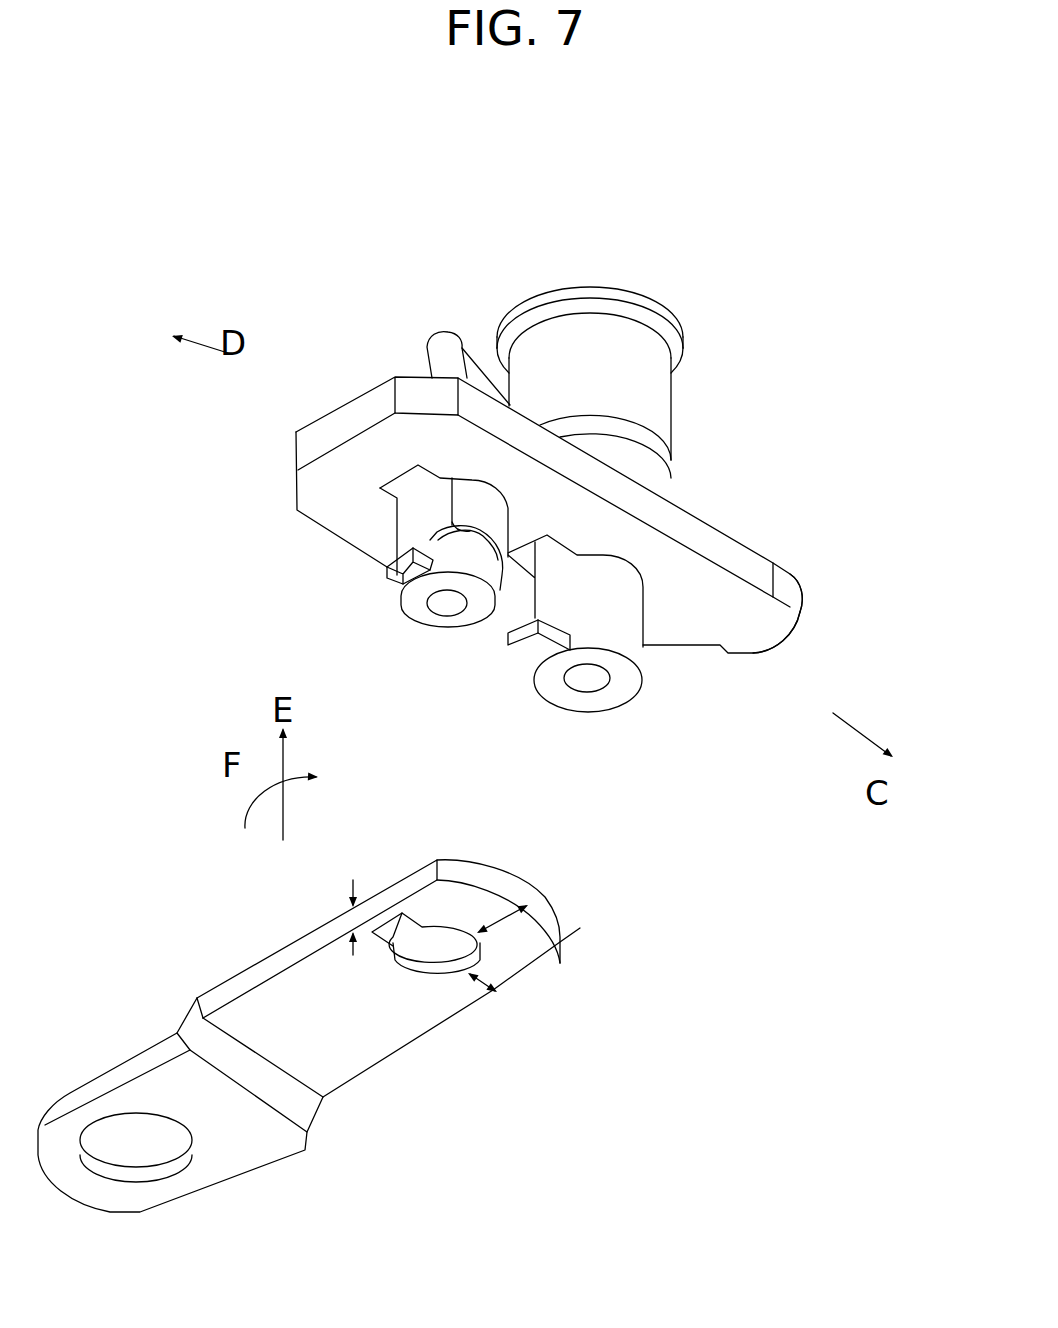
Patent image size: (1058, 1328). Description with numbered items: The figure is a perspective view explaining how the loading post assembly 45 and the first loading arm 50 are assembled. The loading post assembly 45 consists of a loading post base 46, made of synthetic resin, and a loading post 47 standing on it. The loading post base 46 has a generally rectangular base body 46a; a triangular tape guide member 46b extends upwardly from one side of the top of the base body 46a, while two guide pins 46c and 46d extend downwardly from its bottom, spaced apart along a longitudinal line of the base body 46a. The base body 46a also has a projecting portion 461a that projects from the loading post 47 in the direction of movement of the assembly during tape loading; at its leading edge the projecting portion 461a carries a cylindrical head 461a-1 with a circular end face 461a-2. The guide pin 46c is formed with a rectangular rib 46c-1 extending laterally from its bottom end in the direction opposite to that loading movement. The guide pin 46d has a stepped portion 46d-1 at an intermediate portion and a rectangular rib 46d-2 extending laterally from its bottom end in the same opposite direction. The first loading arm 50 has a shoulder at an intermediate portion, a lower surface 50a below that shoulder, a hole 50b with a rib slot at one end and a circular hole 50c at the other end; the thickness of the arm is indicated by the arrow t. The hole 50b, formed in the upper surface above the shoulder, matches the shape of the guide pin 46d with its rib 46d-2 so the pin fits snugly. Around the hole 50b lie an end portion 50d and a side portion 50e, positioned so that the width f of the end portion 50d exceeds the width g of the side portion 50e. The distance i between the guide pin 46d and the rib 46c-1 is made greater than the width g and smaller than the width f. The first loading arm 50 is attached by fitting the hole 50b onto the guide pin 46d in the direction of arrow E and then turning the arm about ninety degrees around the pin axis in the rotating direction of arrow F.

The loading post assembly 45 is at (708, 280).
The loading post base 46 is at (735, 491).
The base body 46a is at (692, 517).
The tape guide member 46b is at (443, 330).
The guide pin 46c is at (633, 647).
The rectangular rib 46c-1 is at (523, 653).
The guide pin 46d is at (423, 627).
The stepped portion 46d-1 is at (455, 511).
The rectangular rib 46d-2 is at (397, 586).
The projecting portion 461a is at (803, 568).
The cylindrical head 461a-1 is at (792, 582).
The circular end face 461a-2 is at (795, 598).
The loading post 47 is at (621, 281).
The first loading arm 50 is at (188, 978).
The lower surface 50a is at (303, 1155).
The hole with rib slot 50b is at (433, 972).
The circular hole 50c is at (110, 1150).
The end portion 50d is at (487, 912).
The side portion 50e is at (470, 997).
The distance between guide pin 46d and rib 46c-1 i is at (490, 620).
The thickness of the first loading arm t is at (362, 890).
The width of the end portion f is at (536, 923).
The width of the side portion g is at (490, 972).